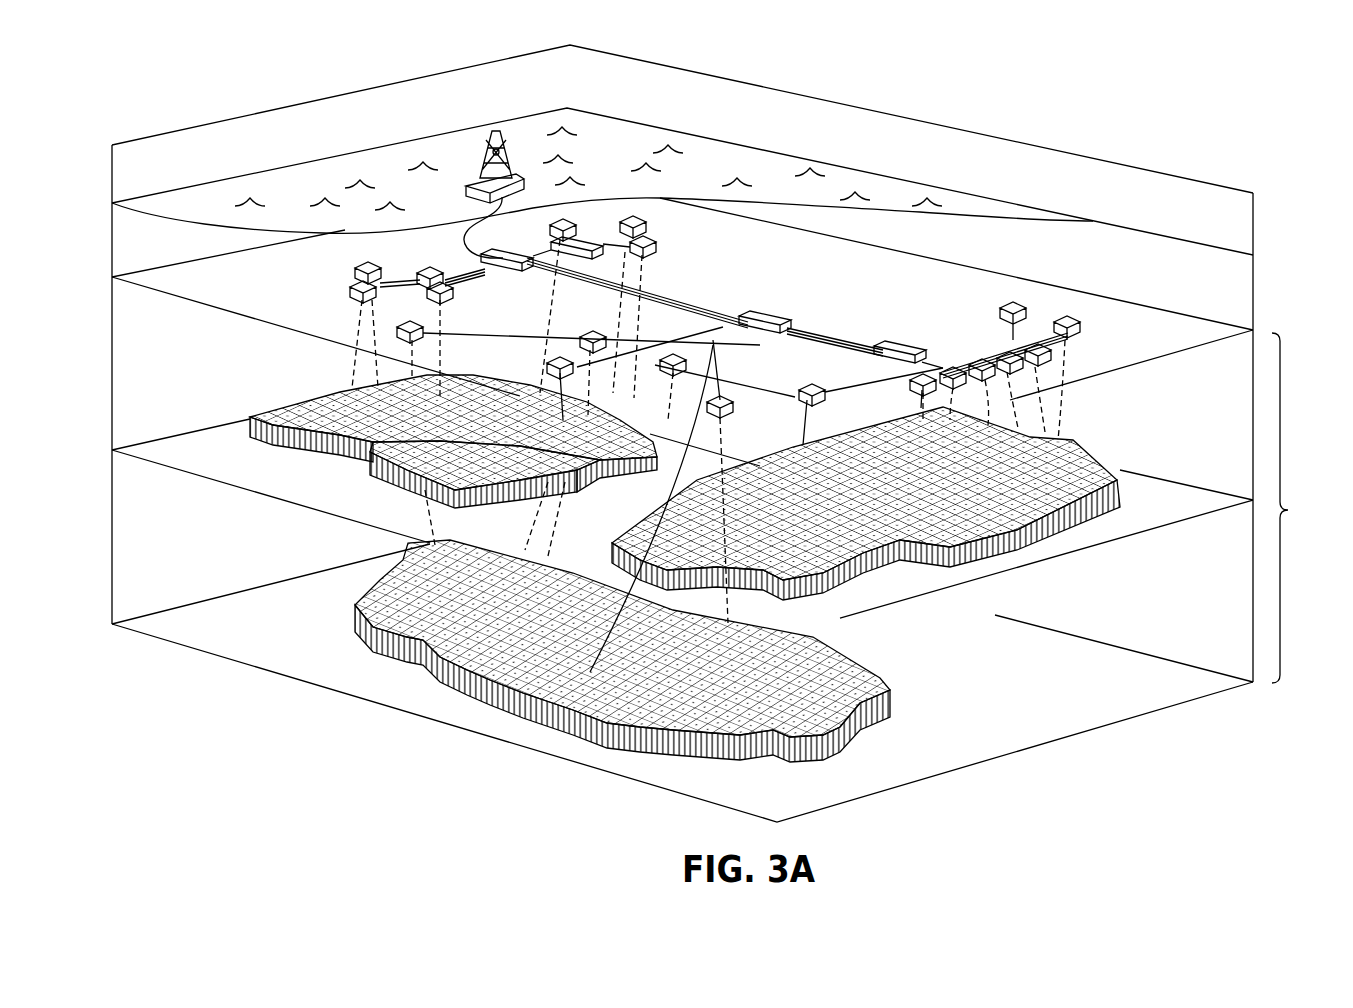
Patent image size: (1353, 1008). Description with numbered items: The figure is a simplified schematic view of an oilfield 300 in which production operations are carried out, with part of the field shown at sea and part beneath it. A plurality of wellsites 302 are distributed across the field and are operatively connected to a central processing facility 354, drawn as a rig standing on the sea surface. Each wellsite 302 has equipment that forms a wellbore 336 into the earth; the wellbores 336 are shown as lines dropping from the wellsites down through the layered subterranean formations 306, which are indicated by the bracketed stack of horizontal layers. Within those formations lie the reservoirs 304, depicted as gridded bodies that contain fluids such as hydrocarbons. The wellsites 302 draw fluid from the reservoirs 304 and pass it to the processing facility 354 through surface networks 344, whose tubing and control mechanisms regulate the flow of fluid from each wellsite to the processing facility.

The oilfield 300 is at (177, 104).
The wellsite 302 is at (832, 368).
The reservoir 304 is at (1004, 574).
The subterranean formation 306 is at (1301, 508).
The wellbore 336 is at (1082, 398).
The surface network 344 is at (396, 294).
The central processing facility 354 is at (477, 150).